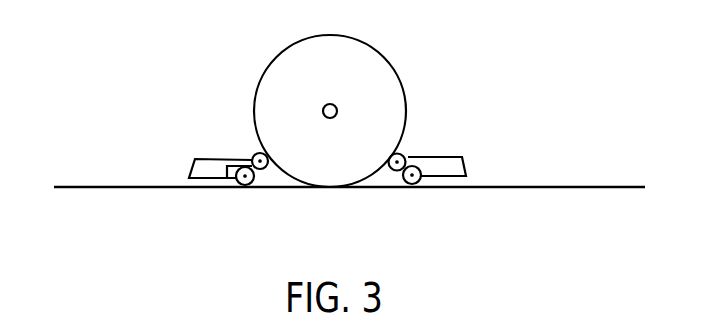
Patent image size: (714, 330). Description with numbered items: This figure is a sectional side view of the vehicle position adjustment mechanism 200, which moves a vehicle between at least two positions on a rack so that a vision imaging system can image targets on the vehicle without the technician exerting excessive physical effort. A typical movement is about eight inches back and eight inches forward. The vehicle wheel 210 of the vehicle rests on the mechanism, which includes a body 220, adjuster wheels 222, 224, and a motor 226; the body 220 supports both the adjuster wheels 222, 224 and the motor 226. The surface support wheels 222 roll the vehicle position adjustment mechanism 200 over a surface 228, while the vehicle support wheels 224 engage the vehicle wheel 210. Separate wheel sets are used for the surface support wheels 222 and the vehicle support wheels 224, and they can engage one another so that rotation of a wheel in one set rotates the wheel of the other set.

The vehicle position adjustment mechanism 200 is at (465, 135).
The vehicle wheel 210 is at (381, 56).
The body 220 is at (466, 168).
The surface support wheels 222 is at (256, 186).
The vehicle support wheels 224 is at (255, 156).
The motor 226 is at (195, 164).
The surface 228 is at (604, 186).